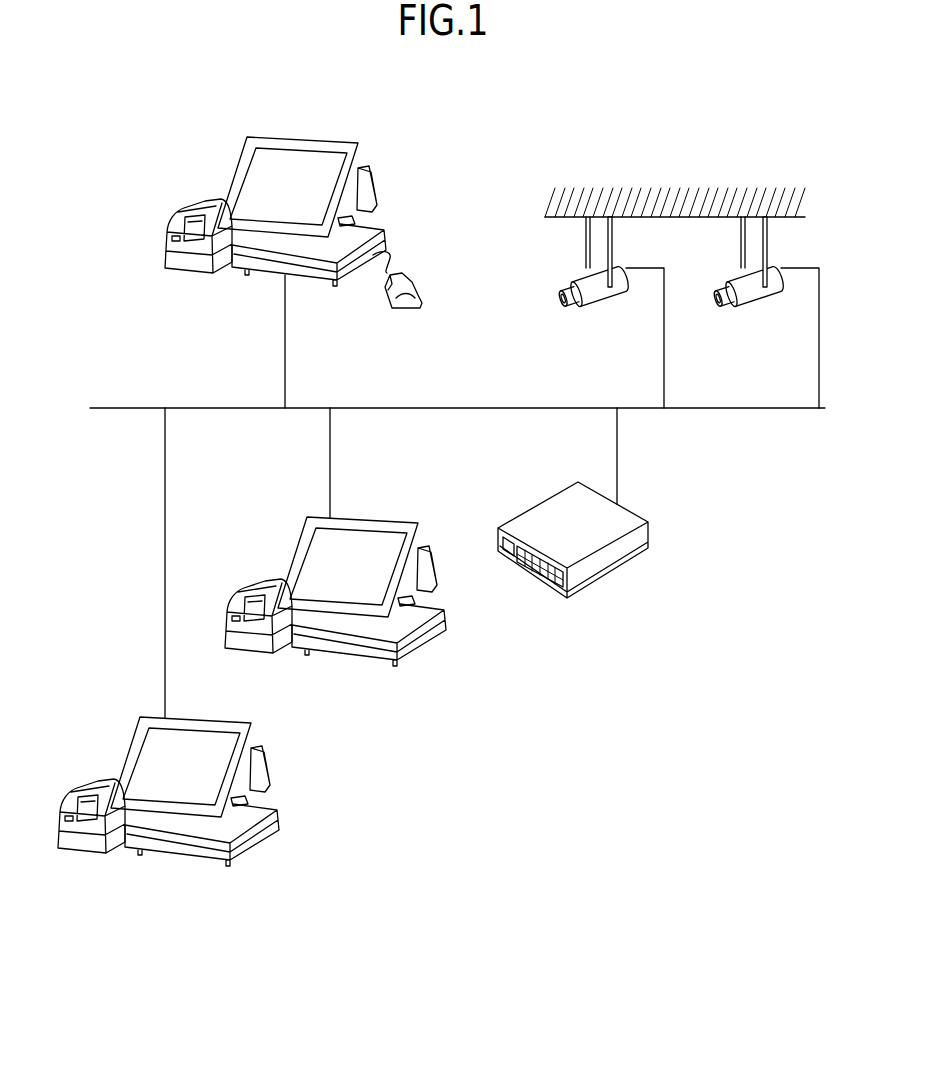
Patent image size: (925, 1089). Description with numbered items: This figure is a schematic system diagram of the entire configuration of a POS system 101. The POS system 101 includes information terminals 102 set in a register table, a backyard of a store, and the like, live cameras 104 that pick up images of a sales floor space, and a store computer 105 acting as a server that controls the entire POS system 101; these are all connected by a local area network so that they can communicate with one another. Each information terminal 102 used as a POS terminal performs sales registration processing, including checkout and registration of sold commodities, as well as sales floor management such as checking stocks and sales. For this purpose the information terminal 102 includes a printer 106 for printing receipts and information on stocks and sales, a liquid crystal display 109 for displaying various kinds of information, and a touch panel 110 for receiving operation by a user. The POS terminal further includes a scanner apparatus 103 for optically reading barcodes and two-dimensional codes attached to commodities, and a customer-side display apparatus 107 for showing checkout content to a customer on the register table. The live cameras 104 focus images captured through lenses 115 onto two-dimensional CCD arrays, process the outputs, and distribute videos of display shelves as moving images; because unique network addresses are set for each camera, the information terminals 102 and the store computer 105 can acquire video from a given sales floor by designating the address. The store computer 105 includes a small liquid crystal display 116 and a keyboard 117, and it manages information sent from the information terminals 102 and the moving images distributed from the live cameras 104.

The POS system 101 is at (125, 158).
The information terminal 102 is at (215, 130).
The scanner apparatus 103 is at (425, 294).
The live camera 104 is at (597, 288).
The store computer 105 is at (542, 517).
The printer 106 is at (188, 263).
The customer-side display apparatus 107 is at (373, 183).
The liquid crystal display 109 is at (273, 142).
The touch panel 110 is at (310, 158).
The lens 115 is at (558, 292).
The small liquid crystal display 116 is at (503, 558).
The keyboard 117 is at (542, 585).